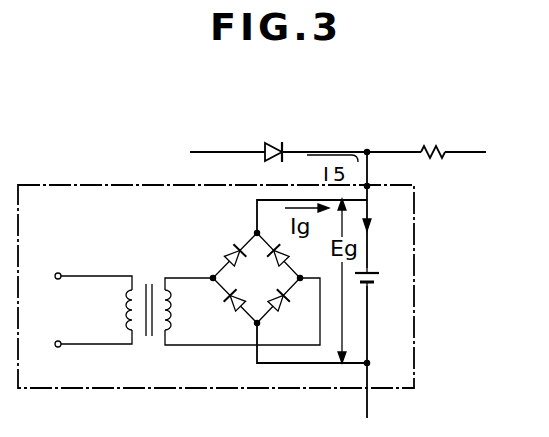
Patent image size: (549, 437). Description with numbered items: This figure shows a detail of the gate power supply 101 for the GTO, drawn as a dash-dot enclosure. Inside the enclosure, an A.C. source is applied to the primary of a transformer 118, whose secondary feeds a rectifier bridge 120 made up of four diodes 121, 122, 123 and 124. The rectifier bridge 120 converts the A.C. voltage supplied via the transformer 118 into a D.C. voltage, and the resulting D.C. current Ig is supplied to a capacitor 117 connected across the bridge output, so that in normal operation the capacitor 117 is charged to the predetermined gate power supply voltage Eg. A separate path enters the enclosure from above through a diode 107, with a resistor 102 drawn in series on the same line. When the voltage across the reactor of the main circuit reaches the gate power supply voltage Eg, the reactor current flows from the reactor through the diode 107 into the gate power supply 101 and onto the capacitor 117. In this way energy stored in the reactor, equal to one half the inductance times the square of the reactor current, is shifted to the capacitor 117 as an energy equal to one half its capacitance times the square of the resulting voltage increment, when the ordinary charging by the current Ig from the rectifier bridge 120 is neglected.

The gate power supply 101 is at (414, 228).
The resistor 102 is at (440, 156).
The diode 107 is at (277, 138).
The capacitor 117 is at (377, 275).
The transformer 118 is at (149, 286).
The rectifier bridge 120 is at (259, 287).
The diode 121 is at (228, 256).
The diode 122 is at (286, 253).
The diode 123 is at (286, 316).
The diode 124 is at (226, 307).